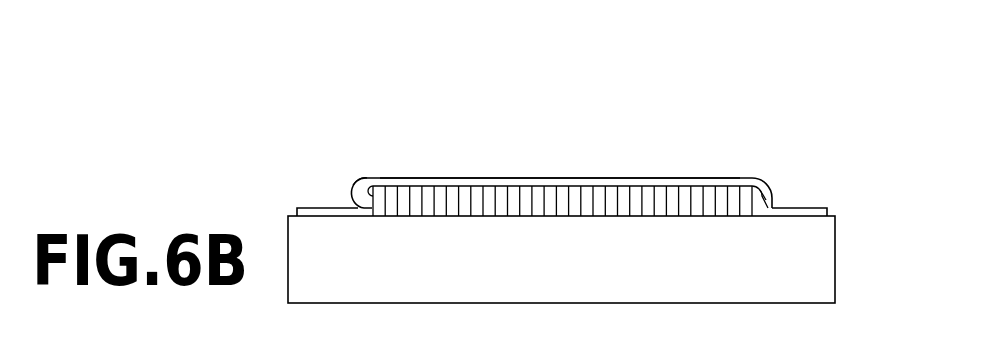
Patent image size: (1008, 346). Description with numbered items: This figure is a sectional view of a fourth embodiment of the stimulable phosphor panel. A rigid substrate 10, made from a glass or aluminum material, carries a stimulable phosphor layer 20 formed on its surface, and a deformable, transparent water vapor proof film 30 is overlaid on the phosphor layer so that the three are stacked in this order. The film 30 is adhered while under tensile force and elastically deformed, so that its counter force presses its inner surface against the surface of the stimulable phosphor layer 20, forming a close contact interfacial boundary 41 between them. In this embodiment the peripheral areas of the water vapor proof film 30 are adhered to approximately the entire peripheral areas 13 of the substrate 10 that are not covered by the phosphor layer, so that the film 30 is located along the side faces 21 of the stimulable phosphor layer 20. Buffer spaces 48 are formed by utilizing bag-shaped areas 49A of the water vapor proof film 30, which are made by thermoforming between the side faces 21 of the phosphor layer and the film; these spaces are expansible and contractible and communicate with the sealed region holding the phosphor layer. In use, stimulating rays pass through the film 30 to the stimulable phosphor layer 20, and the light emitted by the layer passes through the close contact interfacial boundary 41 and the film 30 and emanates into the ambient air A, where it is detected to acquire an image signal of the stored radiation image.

The substrate 10 is at (825, 255).
The peripheral areas 13 is at (803, 205).
The stimulable phosphor layer 20 is at (685, 200).
The water vapor proof film 30 is at (622, 183).
The close contact interfacial boundary 41 is at (535, 172).
The buffer spaces 48 is at (367, 187).
The bag-shaped areas 49A is at (355, 182).
The side faces 21 is at (776, 194).
The ambient air A is at (843, 79).